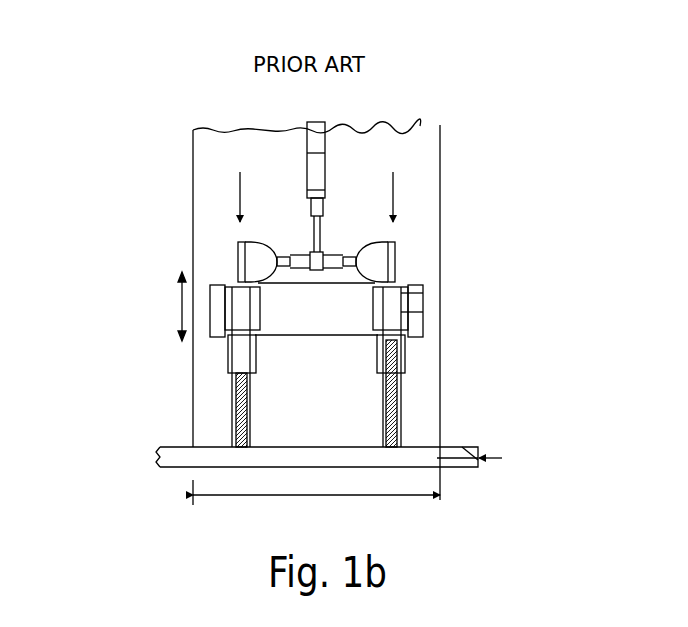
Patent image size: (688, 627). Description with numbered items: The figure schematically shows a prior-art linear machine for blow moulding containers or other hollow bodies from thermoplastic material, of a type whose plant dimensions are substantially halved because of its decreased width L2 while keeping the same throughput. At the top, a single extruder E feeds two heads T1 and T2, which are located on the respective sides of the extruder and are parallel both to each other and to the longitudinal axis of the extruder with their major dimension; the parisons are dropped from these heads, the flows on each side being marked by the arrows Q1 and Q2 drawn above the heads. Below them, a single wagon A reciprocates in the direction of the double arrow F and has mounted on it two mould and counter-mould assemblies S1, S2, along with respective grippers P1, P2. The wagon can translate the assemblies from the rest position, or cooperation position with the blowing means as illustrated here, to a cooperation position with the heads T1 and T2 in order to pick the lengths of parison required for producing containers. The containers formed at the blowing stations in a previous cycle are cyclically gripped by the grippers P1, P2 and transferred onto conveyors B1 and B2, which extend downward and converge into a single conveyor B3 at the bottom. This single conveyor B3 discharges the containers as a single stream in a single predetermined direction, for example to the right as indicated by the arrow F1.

The extruder E is at (327, 160).
The second flow Q2 is at (240, 192).
The first flow Q1 is at (393, 197).
The head T2 is at (238, 250).
The head T1 is at (385, 256).
The wagon A is at (410, 283).
The mould and counter-mould assembly S2 is at (254, 300).
The mould and counter-mould assembly S1 is at (406, 297).
The direction of reciprocation F is at (182, 305).
The gripper P2 is at (230, 361).
The gripper P1 is at (398, 357).
The conveyor B2 is at (233, 412).
The conveyor B1 is at (400, 412).
The single conveyor B3 is at (460, 449).
The discharge direction F1 is at (492, 460).
The width L2 is at (316, 486).